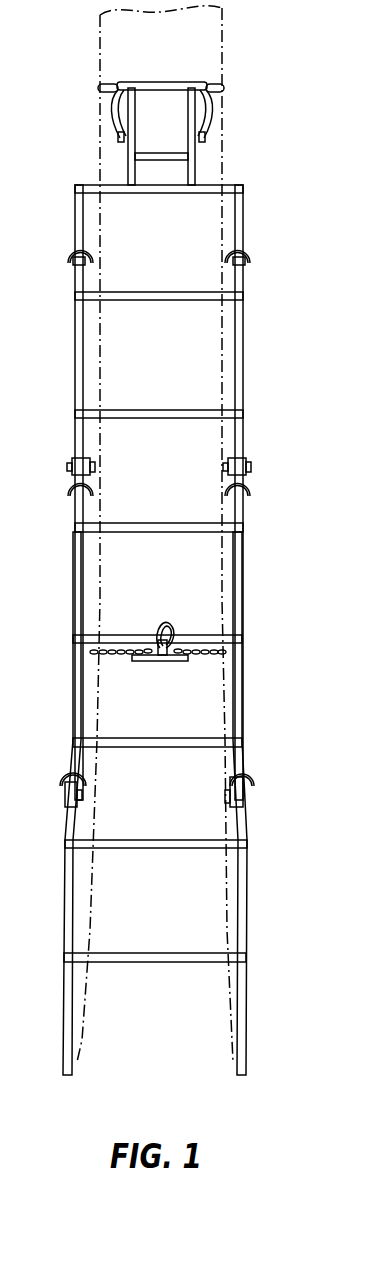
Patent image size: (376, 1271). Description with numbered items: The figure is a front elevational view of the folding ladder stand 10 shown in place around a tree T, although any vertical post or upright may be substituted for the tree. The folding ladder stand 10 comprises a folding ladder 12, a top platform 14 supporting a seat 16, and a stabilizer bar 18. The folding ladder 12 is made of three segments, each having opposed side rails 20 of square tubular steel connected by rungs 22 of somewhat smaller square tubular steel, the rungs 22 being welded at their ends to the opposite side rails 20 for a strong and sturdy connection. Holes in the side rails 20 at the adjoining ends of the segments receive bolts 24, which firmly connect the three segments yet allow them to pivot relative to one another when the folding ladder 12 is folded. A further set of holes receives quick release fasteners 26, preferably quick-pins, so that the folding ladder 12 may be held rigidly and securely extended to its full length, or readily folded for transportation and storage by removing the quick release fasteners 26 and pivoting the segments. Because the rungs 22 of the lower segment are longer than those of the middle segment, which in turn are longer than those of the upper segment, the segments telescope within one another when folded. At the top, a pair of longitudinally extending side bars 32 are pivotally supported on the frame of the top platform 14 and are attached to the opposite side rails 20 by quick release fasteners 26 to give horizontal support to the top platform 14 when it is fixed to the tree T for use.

The tree T is at (224, 42).
The folding ladder stand 10 is at (251, 215).
The folding ladder 12 is at (250, 606).
The top platform 14 is at (236, 162).
The seat 16 is at (231, 94).
The stabilizer bar 18 is at (194, 667).
The side rails 20 is at (165, 629).
The rungs 22 is at (147, 291).
The bolts 24 is at (70, 466).
The quick release fasteners 26 is at (68, 488).
The side bars 32 is at (72, 252).